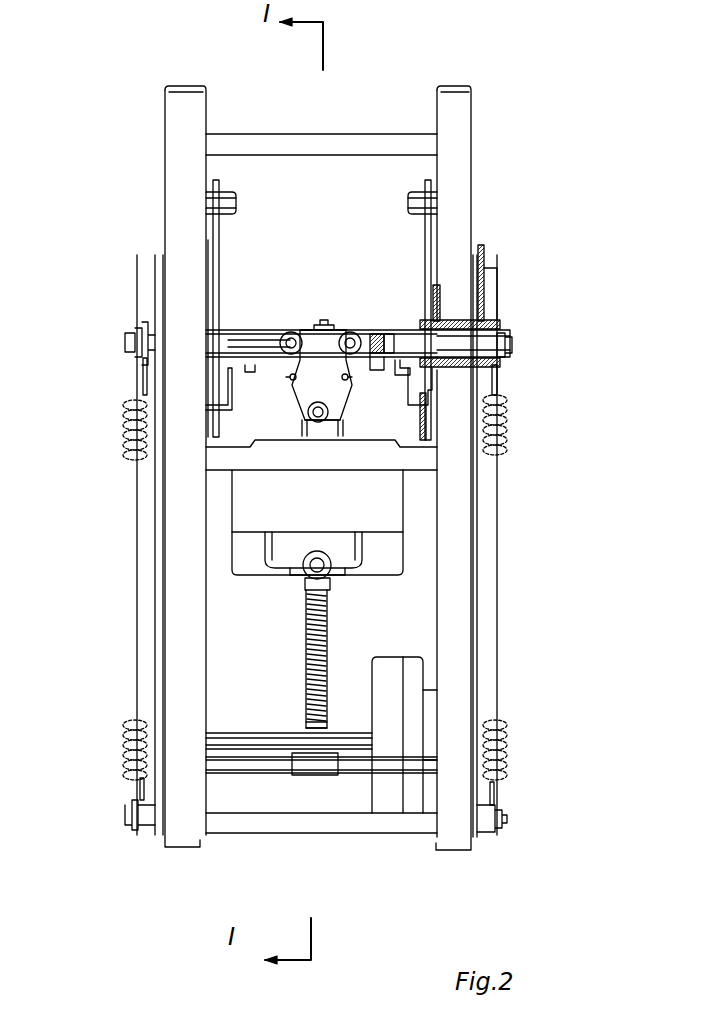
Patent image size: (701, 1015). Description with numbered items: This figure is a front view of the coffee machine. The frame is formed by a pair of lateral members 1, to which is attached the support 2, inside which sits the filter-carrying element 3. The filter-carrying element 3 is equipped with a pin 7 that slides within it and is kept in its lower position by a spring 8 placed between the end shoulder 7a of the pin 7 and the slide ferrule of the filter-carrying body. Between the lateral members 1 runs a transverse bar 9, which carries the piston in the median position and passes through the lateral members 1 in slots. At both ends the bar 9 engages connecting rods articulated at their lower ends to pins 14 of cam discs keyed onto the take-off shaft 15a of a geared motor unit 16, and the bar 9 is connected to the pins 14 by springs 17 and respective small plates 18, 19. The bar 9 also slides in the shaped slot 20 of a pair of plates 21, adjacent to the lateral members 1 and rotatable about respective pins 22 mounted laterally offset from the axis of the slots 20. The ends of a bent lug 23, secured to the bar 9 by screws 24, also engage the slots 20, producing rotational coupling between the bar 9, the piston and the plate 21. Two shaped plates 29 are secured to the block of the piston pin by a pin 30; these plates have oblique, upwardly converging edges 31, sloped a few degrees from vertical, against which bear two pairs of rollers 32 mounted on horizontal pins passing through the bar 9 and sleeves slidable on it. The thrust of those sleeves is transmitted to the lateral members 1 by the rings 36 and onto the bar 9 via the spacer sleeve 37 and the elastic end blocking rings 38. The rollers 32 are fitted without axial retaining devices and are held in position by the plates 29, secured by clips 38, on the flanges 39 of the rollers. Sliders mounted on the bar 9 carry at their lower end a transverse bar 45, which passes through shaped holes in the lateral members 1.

The lateral members 1 is at (165, 570).
The support 2 is at (312, 515).
The filter-carrying element 3 is at (295, 570).
The pin 7 is at (306, 638).
The end shoulder 7a is at (306, 725).
The spring 8 is at (338, 660).
The transverse bar 9 is at (500, 343).
The pins 14 is at (125, 815).
The take-off shaft 15a is at (240, 770).
The geared motor unit 16 is at (385, 680).
The springs 17 is at (122, 432).
The small plate 18 is at (143, 378).
The small plate 19 is at (140, 790).
The shaped slot 20 is at (442, 440).
The plates 21 is at (219, 295).
The pins 22 is at (225, 203).
The bent lug 23 is at (410, 404).
The screws 24 is at (398, 372).
The shaped plates 29 is at (305, 420).
The pin 30 is at (318, 422).
The oblique edges 31 is at (283, 342).
The rollers 32 is at (352, 332).
The rings 36 is at (433, 318).
The spacer sleeve 37 is at (481, 318).
The elastic end blocking rings 38 is at (125, 343).
The flanges 39 is at (376, 332).
The transverse bar 45 is at (318, 775).